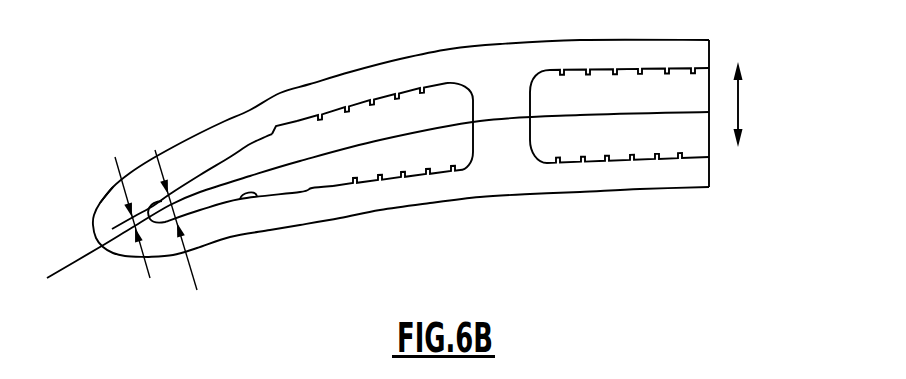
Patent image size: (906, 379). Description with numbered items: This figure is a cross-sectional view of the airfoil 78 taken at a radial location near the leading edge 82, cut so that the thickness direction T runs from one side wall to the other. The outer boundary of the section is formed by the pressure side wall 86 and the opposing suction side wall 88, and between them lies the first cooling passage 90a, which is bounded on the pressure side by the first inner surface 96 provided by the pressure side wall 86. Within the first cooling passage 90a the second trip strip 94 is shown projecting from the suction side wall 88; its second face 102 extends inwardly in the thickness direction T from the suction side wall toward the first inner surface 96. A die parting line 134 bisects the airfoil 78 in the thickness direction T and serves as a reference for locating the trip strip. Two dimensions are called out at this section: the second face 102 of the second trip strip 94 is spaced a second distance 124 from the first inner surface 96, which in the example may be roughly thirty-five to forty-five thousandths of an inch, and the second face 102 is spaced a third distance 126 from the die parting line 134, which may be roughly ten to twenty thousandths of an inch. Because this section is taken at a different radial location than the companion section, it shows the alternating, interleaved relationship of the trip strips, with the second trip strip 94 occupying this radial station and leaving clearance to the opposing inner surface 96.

The airfoil 78 is at (188, 62).
The leading edge 82 is at (95, 239).
The pressure side wall 86 is at (487, 190).
The suction side wall 88 is at (310, 92).
The first cooling passage 90a is at (408, 167).
The second trip strip 94 is at (298, 123).
The first inner surface 96 is at (256, 199).
The second face 102 is at (200, 176).
The second distance 124 is at (197, 286).
The third distance 126 is at (113, 160).
The die parting line 134 is at (66, 272).
The thickness direction T is at (739, 104).